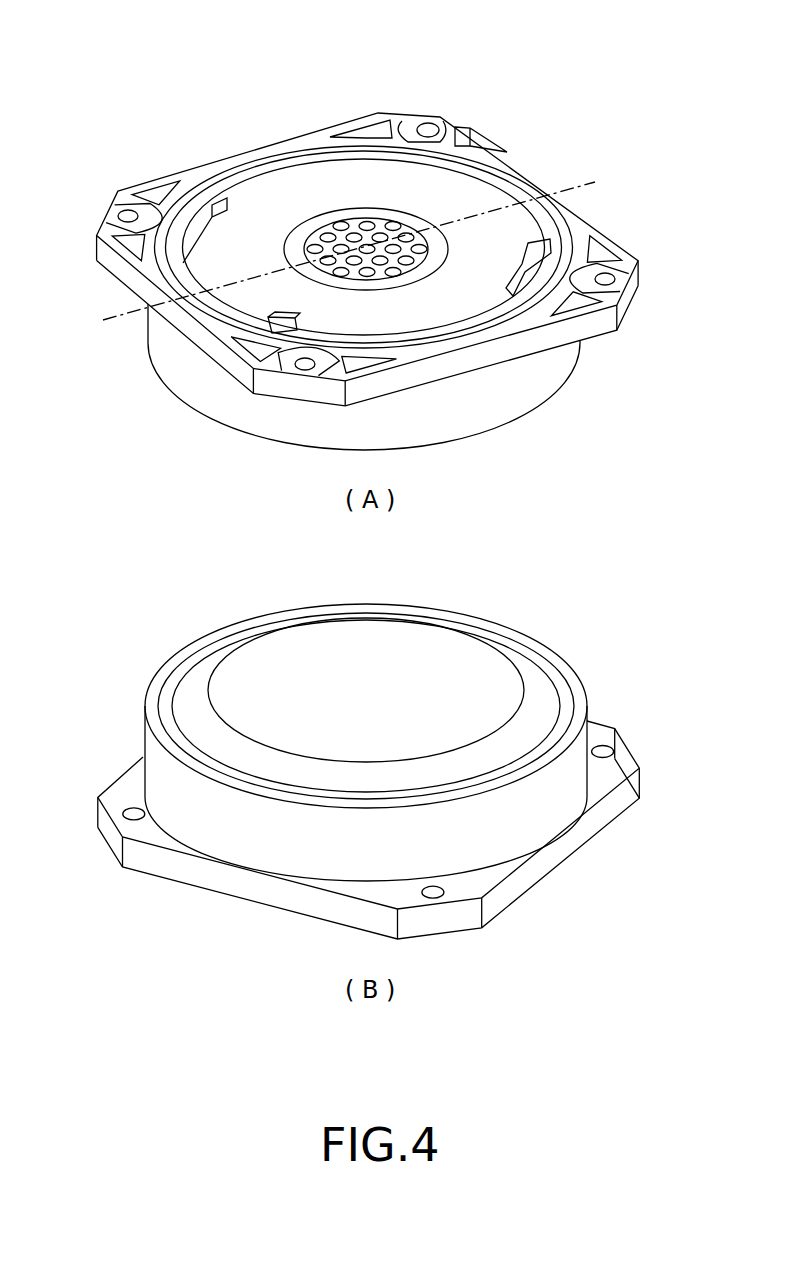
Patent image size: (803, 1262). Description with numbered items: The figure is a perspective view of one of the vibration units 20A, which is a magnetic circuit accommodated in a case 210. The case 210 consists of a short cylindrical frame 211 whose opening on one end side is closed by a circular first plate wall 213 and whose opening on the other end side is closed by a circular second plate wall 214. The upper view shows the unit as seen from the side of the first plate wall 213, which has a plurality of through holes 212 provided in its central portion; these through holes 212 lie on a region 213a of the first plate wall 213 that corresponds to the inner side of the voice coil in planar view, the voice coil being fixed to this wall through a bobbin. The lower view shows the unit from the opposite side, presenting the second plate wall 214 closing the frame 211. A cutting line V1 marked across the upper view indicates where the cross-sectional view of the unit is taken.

The vibration unit 20A is at (374, 484).
The case 210 is at (230, 146).
The short cylindrical frame 211 is at (543, 414).
The through holes 212 is at (393, 247).
The first plate wall 213 is at (303, 190).
The region 213a is at (452, 250).
The second plate wall 214 is at (498, 670).
The cutting line V1 is at (598, 184).